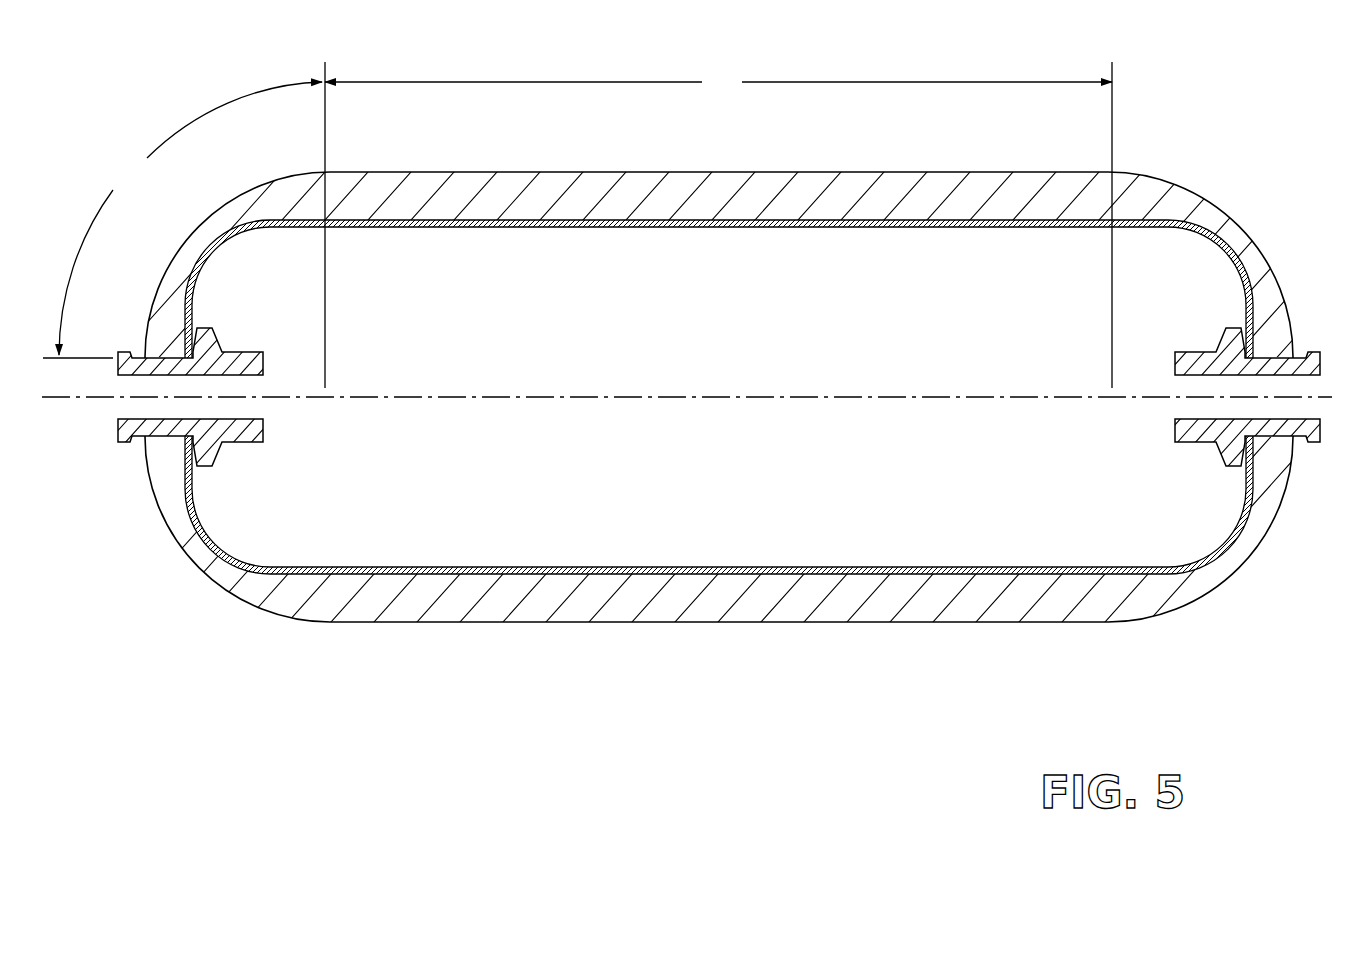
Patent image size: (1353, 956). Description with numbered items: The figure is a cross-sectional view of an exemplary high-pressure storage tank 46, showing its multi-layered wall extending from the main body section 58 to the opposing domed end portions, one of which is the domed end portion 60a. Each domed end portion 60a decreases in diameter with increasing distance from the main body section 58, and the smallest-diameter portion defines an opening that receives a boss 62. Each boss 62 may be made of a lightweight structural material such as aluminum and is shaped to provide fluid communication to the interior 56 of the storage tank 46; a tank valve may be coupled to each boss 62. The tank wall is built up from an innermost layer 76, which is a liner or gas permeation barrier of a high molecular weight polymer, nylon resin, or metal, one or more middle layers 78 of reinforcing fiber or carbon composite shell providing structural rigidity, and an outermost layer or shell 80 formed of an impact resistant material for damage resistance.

The storage tank 46 is at (1274, 147).
The interior 56 is at (726, 344).
The main body section 58 is at (718, 225).
The domed end portion 60a is at (182, 220).
The boss 62 is at (233, 351).
The innermost layer 76 is at (755, 567).
The middle layer 78 is at (720, 603).
The outermost layer or shell 80 is at (433, 622).